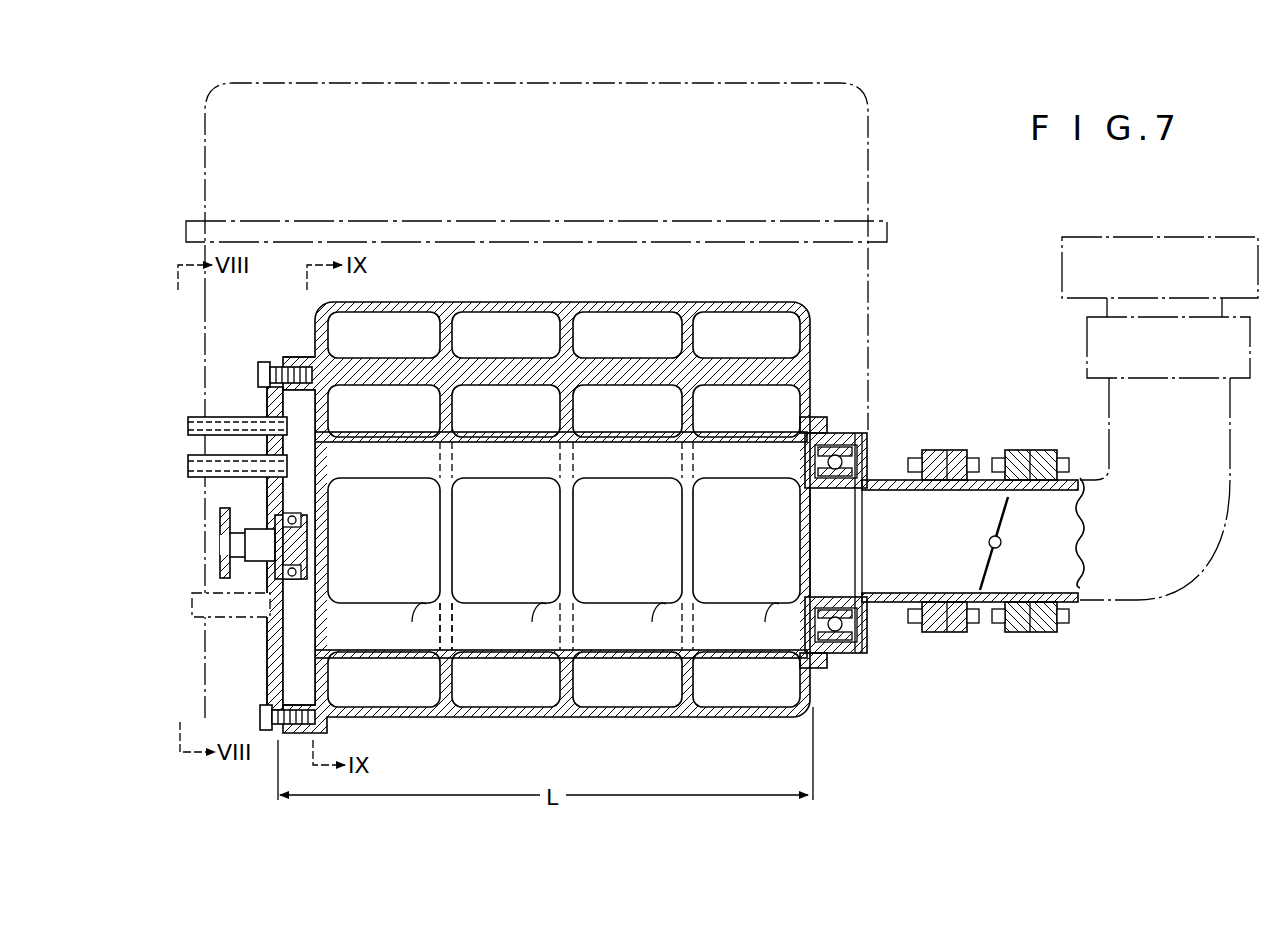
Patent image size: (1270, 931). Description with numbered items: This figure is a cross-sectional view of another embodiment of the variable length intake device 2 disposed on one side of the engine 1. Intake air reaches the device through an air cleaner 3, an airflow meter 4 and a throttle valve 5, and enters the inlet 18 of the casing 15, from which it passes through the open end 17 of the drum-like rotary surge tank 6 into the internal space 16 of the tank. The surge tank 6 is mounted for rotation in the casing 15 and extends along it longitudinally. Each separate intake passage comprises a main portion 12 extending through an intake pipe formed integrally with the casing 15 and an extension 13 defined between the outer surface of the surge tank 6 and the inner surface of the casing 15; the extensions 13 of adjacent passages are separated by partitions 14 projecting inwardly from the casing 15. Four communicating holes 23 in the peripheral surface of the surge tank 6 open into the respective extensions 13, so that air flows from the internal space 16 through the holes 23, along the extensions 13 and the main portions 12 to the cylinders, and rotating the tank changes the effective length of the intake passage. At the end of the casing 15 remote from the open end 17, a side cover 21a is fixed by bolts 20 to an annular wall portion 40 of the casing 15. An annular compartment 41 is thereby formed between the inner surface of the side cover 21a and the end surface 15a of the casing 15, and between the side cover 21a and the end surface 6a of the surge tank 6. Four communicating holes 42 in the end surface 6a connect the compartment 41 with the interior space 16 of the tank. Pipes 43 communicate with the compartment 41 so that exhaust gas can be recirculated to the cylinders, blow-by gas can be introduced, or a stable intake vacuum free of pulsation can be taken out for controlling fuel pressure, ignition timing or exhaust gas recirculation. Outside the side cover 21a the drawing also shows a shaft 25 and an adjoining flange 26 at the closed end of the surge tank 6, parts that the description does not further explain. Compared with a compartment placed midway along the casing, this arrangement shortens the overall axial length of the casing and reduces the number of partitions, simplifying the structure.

The engine 1 is at (895, 205).
The variable length intake device 2 is at (900, 634).
The air cleaner 3 is at (1062, 282).
The airflow meter 4 is at (1087, 360).
The throttle valve 5 is at (988, 552).
The rotary surge tank 6 is at (426, 660).
The end surface of the surge tank 6a is at (290, 655).
The main portion 12 is at (755, 347).
The extension 13 is at (759, 419).
The partitions 14 is at (455, 700).
The casing 15 is at (588, 722).
The end surface of the casing 15a is at (330, 700).
The internal space 16 is at (759, 548).
The open end 17 is at (841, 545).
The inlet 18 is at (913, 545).
The bolts 20 is at (262, 372).
The side cover 21a is at (268, 700).
The communicating holes 23 is at (586, 623).
The shaft 25 is at (230, 550).
The flange 26 is at (222, 517).
The annular wall portion 40 is at (300, 733).
The annular compartment 41 is at (285, 640).
The communicating holes 42 is at (327, 478).
The pipes 43 is at (195, 420).